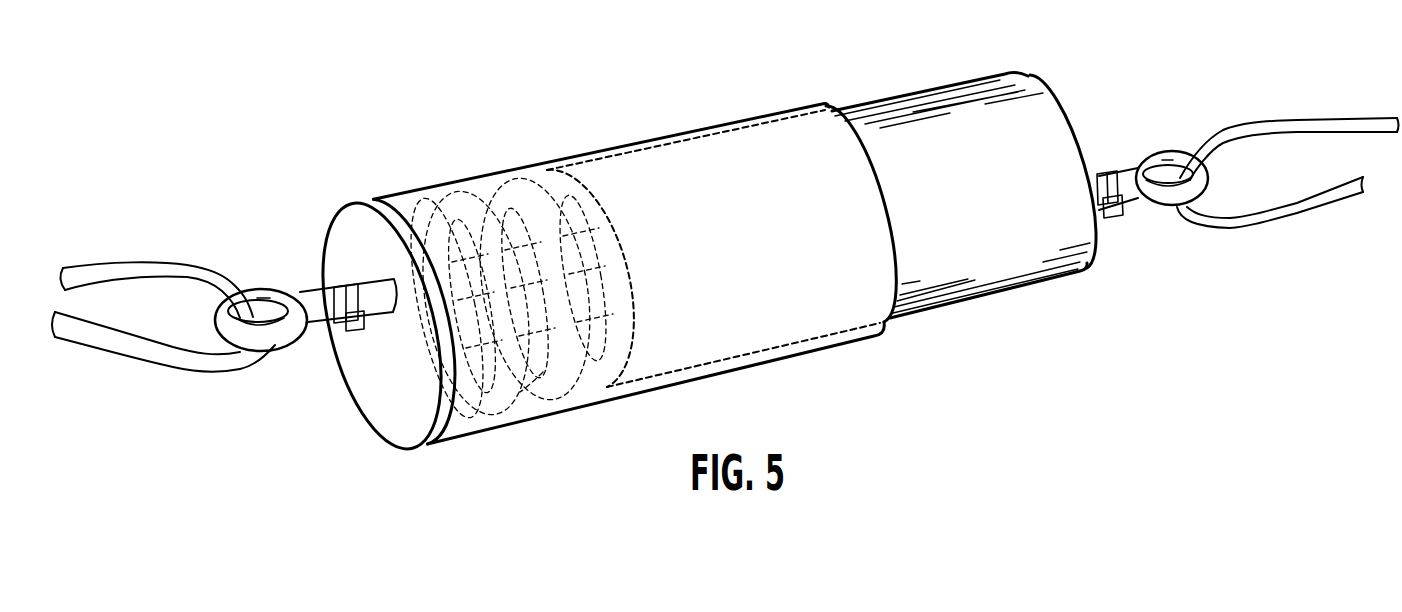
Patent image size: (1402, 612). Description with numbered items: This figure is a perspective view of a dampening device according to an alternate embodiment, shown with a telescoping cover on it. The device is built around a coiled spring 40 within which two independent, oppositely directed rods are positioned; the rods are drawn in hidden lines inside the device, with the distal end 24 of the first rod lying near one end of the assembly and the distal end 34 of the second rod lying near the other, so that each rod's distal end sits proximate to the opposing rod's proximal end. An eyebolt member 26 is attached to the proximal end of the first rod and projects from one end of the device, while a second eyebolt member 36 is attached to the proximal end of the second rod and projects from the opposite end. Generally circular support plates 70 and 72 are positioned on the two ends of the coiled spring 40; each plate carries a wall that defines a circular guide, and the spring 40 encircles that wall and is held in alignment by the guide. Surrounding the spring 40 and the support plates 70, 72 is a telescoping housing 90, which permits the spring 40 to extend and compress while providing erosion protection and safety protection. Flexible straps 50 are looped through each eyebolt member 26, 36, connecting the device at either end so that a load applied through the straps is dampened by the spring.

The distal end 24 is at (537, 190).
The eyebolt member 26 is at (263, 290).
The distal end 34 is at (543, 372).
The eyebolt member 36 is at (1140, 156).
The spring 40 is at (443, 199).
The strap 50 is at (140, 264).
The support plate 70 is at (347, 232).
The support plate 72 is at (1067, 103).
The telescoping housing 90 is at (887, 117).